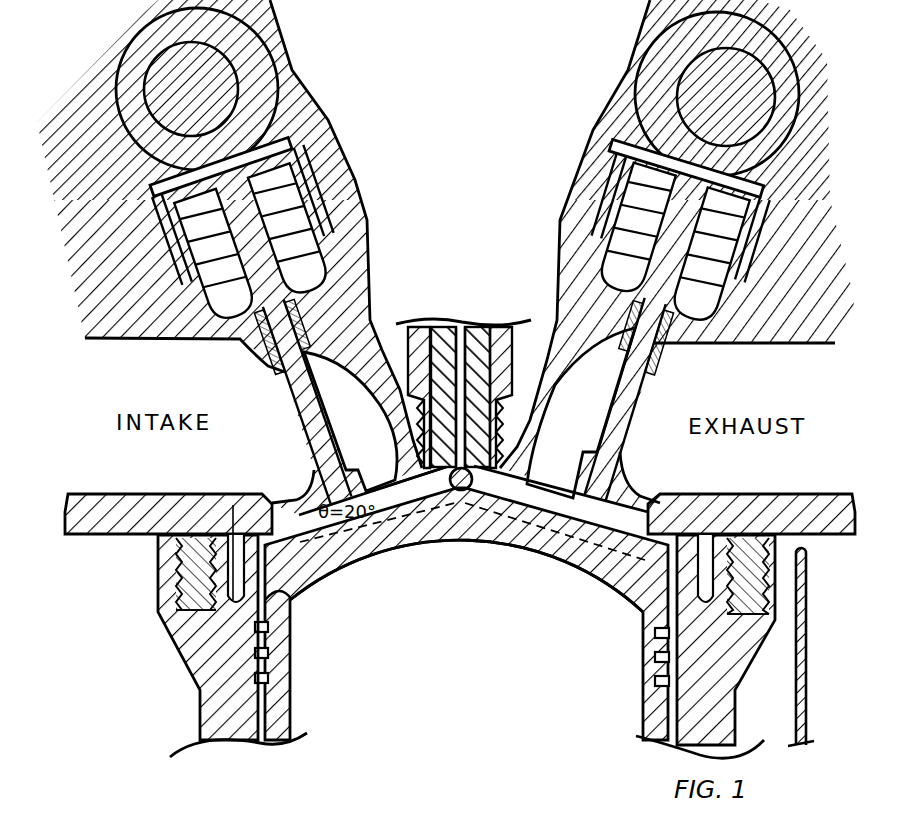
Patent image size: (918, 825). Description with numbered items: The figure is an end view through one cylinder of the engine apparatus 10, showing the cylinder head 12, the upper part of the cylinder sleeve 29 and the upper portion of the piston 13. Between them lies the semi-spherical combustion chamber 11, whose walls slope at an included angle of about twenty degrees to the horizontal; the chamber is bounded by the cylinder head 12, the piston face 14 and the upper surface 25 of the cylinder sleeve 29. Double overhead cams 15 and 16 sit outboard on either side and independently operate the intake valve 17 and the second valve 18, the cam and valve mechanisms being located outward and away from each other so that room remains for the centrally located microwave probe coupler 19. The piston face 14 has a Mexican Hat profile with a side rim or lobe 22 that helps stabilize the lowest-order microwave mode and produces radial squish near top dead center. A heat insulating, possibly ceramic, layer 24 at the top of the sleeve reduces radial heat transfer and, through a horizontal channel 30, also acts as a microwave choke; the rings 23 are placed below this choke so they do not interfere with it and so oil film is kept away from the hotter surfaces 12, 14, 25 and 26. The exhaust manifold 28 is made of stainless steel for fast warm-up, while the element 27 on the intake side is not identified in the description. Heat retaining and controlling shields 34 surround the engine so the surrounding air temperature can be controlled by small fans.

The engine apparatus 10 is at (158, 662).
The combustion chamber 11 is at (623, 330).
The cylinder head 12 is at (432, 479).
The piston 13 is at (546, 560).
The piston face 14 is at (414, 504).
The overhead cam 15 is at (322, 94).
The overhead cam 16 is at (640, 80).
The intake valve 17 is at (308, 500).
The valve 18 is at (581, 413).
The microwave probe coupler 19 is at (463, 388).
The side rim or lobe 22 is at (318, 562).
The rings 23 is at (292, 675).
The heat insulating layer 24 is at (240, 500).
The upper surface of the cylinder sleeve 25 is at (645, 604).
The hotter surface 26 is at (640, 622).
The head gasket plate 27 is at (168, 514).
The exhaust manifold 28 is at (751, 514).
The cylinder sleeve 29 is at (232, 646).
The horizontal channel 30 is at (290, 600).
The heat retaining and controlling shields 34 is at (836, 633).